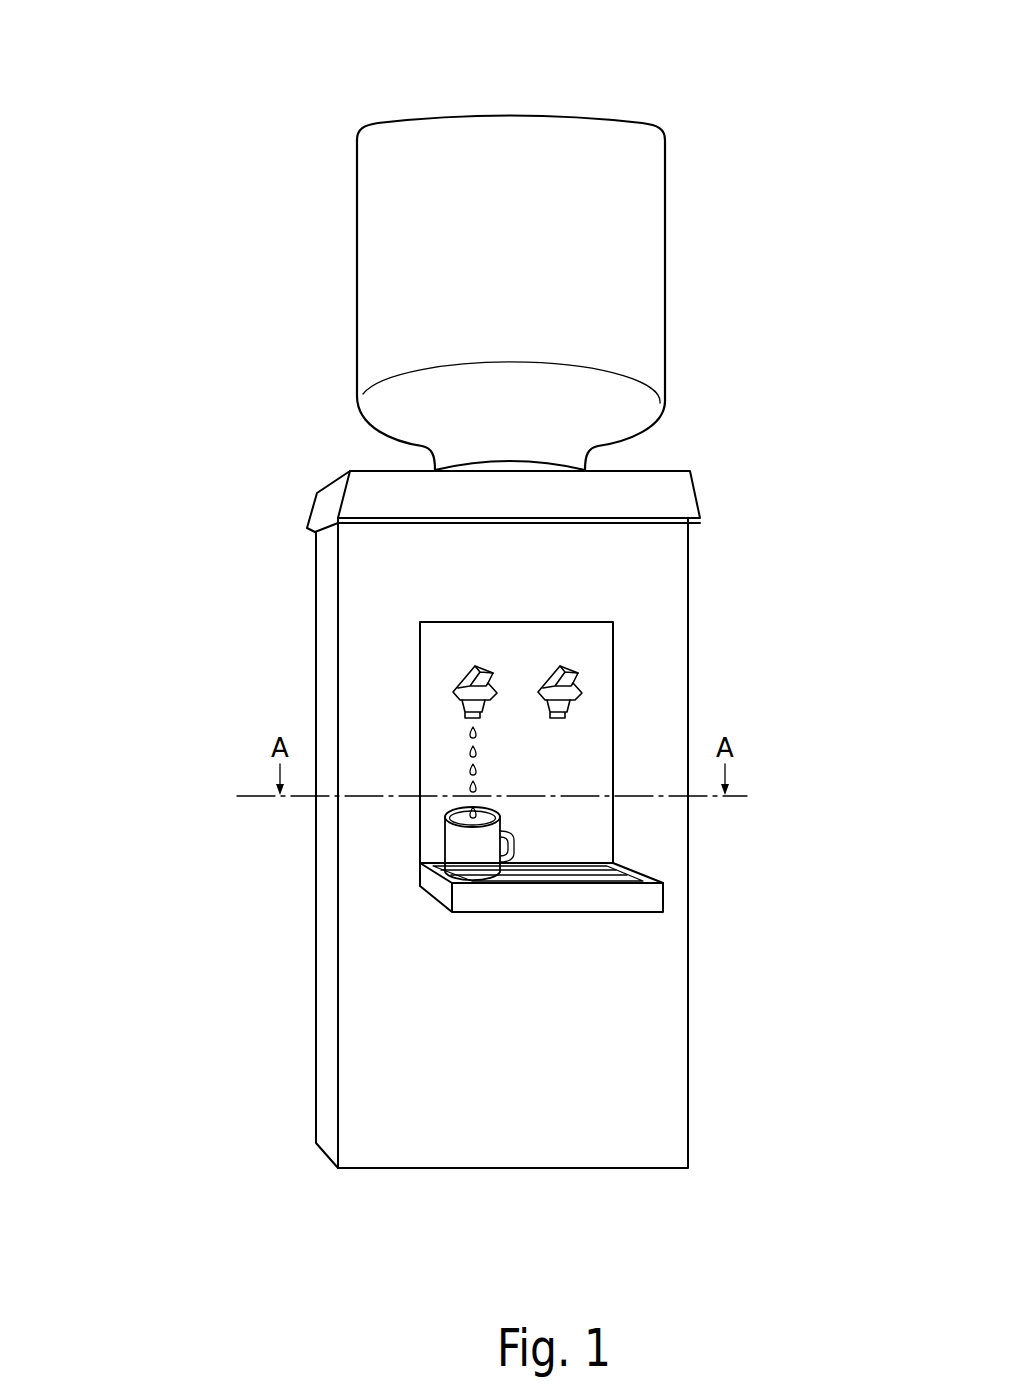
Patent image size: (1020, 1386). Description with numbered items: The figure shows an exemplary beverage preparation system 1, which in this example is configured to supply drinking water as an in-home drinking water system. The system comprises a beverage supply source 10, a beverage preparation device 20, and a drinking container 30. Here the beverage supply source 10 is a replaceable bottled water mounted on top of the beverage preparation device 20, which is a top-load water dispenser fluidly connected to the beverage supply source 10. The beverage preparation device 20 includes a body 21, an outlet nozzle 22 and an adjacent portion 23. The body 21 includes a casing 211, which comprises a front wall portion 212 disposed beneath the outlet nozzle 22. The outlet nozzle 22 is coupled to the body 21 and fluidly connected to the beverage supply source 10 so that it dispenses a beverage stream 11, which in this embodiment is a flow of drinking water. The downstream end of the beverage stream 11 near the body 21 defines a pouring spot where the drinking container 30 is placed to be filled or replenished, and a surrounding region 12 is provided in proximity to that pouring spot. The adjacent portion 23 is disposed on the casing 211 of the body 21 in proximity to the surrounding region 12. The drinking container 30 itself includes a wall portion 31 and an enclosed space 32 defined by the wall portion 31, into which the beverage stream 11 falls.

The beverage preparation system 1 is at (73, 28).
The beverage supply source 10 is at (645, 275).
The beverage stream 11 is at (468, 729).
The surrounding region 12 is at (550, 857).
The beverage preparation device 20 is at (775, 540).
The body 21 is at (665, 575).
The casing 211 is at (375, 575).
The front wall portion 212 is at (443, 762).
The outlet nozzle 22 is at (575, 675).
The adjacent portion 23 is at (598, 770).
The drinking container 30 is at (250, 810).
The wall portion 31 is at (462, 863).
The enclosed space 32 is at (440, 808).